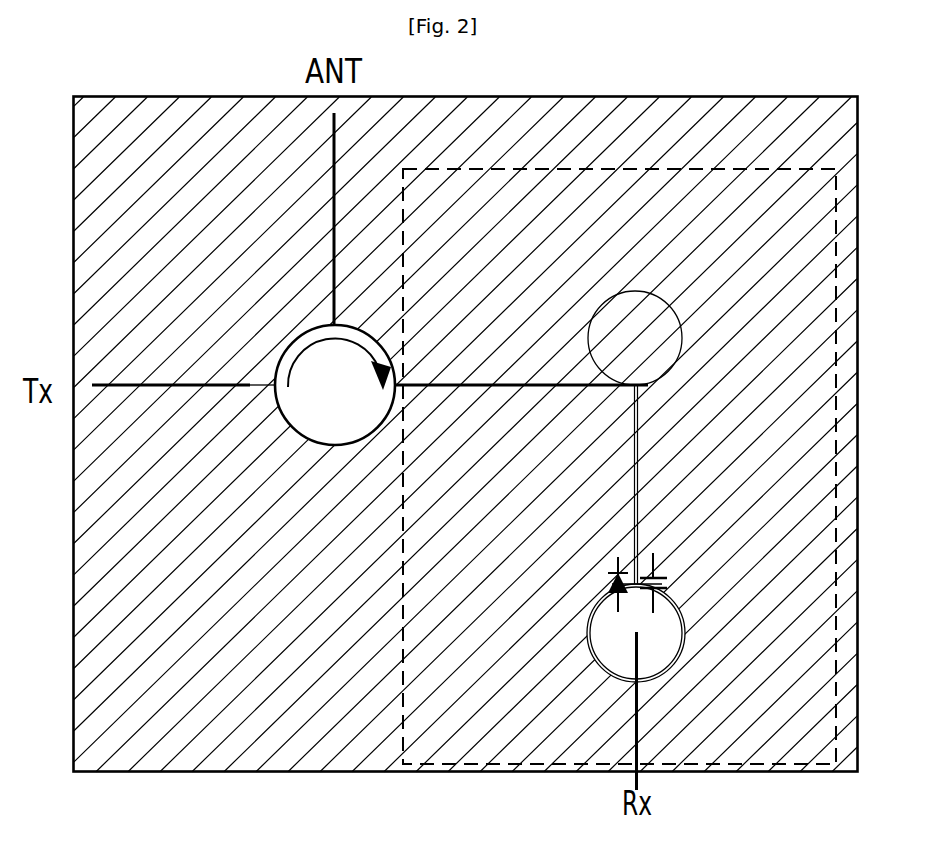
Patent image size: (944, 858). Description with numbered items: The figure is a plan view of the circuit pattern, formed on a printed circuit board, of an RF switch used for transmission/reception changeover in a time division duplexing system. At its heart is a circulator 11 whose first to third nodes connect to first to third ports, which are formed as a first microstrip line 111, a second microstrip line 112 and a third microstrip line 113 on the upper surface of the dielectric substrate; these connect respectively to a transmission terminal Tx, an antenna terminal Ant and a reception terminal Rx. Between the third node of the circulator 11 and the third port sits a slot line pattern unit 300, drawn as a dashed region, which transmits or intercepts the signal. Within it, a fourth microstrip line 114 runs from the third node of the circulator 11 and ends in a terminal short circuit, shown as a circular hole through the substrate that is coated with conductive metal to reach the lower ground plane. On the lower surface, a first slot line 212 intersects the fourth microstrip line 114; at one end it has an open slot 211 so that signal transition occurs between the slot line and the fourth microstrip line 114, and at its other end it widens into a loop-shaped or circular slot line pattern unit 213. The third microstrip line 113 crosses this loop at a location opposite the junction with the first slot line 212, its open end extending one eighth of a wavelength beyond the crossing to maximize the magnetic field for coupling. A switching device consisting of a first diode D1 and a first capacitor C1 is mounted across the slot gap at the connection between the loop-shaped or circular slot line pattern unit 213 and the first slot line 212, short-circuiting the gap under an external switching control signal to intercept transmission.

The circulator 11 is at (337, 445).
The first microstrip line 111 is at (172, 383).
The second microstrip line 112 is at (333, 213).
The third microstrip line 113 is at (638, 707).
The fourth microstrip line 114 is at (494, 383).
The open slot 211 is at (636, 291).
The first slot line 212 is at (638, 487).
The loop-shaped or circular slot line pattern unit 213 is at (687, 630).
The slot line pattern unit 300 is at (619, 441).
The first diode D1 is at (594, 579).
The first capacitor C1 is at (676, 579).